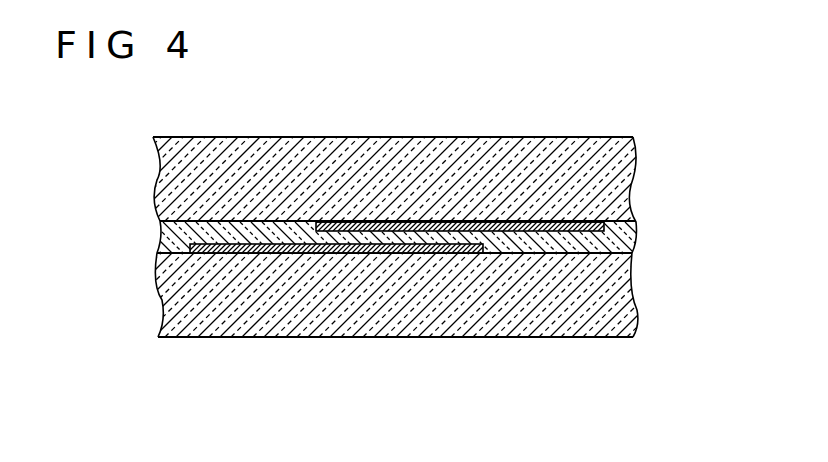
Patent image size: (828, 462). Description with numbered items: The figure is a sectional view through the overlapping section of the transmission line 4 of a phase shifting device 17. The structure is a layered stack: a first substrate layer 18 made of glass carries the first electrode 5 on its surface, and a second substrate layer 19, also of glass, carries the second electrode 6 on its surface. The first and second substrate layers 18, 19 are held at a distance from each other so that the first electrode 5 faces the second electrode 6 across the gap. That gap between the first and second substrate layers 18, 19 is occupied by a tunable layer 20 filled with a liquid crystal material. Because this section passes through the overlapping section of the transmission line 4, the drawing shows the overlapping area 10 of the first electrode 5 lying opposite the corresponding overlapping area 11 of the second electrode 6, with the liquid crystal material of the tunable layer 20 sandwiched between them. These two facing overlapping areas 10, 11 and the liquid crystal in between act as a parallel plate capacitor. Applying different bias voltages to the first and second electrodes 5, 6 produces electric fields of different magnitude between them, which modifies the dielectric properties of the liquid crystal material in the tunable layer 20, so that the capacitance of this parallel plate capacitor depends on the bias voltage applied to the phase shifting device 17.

The phase shifting device 17 is at (640, 116).
The first substrate layer 18 is at (165, 170).
The second substrate layer 19 is at (165, 313).
The transmission line 4 is at (116, 233).
The tunable layer 20 is at (157, 250).
The first electrode 5 is at (530, 222).
The overlapping area of the first electrode 10 is at (430, 222).
The second electrode 6 is at (300, 254).
The overlapping area of the second electrode 11 is at (407, 254).